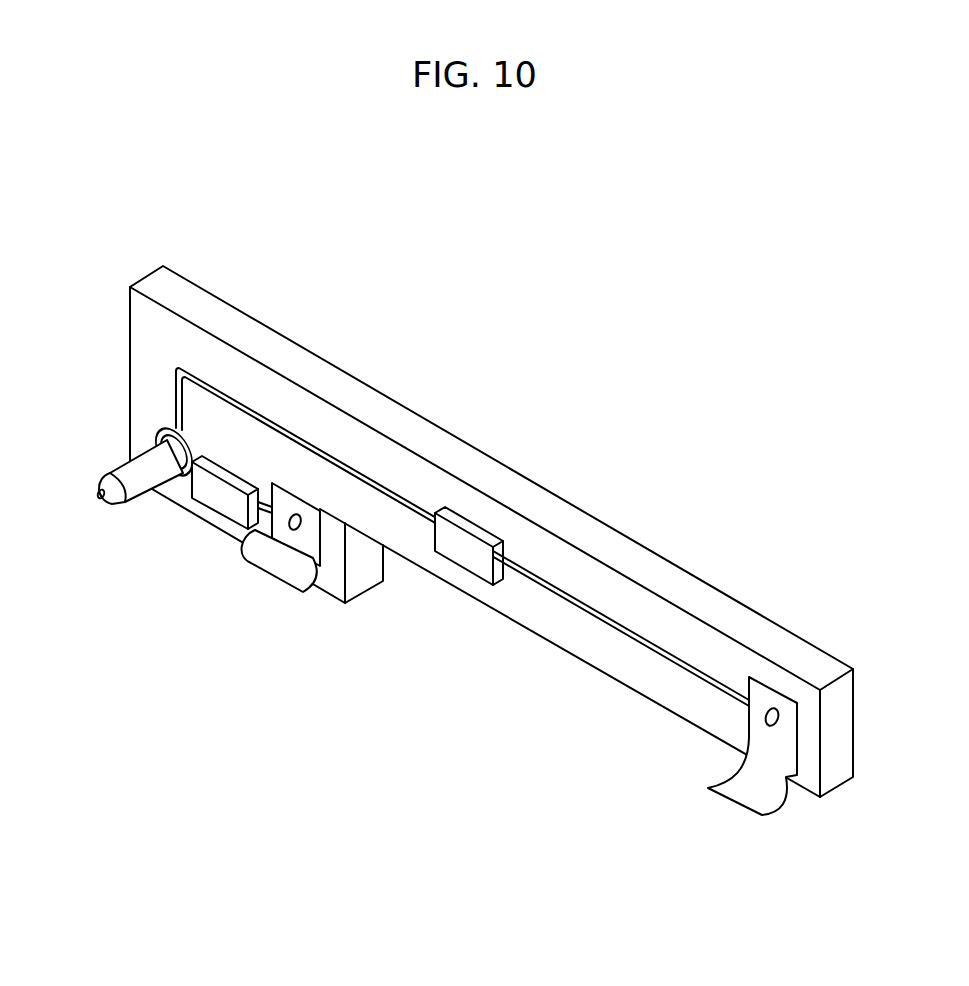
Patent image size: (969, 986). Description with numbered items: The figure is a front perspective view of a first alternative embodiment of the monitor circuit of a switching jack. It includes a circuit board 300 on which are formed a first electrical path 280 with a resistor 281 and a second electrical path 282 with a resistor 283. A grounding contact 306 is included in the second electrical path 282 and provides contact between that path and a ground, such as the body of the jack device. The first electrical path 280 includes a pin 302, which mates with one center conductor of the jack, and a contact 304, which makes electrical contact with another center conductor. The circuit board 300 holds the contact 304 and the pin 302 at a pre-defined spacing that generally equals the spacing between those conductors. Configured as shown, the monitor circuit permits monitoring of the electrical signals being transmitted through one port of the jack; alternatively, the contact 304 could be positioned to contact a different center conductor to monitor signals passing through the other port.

The circuit board 300 is at (177, 290).
The first electrical path 280 is at (600, 615).
The resistor 281 is at (463, 545).
The second electrical path 282 is at (268, 503).
The resistor 283 is at (227, 500).
The pin 302 is at (108, 472).
The contact 304 is at (753, 802).
The grounding contact 306 is at (270, 563).